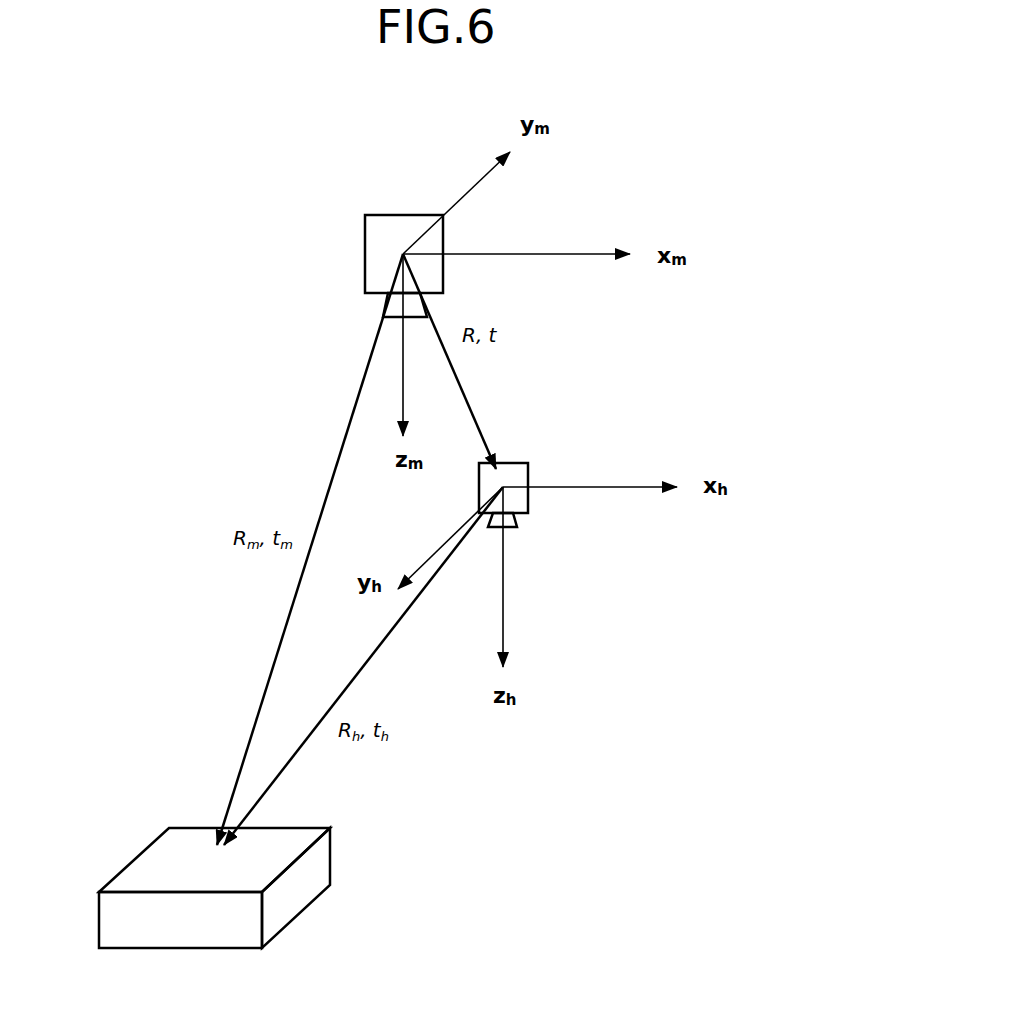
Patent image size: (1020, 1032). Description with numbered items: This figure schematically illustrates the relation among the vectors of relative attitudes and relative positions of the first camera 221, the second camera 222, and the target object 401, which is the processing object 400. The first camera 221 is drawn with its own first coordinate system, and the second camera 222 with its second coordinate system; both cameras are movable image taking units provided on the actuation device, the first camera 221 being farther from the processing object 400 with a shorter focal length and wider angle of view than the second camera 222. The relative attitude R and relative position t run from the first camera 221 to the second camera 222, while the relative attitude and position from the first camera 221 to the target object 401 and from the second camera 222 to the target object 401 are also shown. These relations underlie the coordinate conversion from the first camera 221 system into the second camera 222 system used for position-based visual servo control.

The first camera 221 is at (380, 215).
The second camera 222 is at (517, 462).
The target object 401 is at (318, 860).
The processing object 400 is at (293, 888).